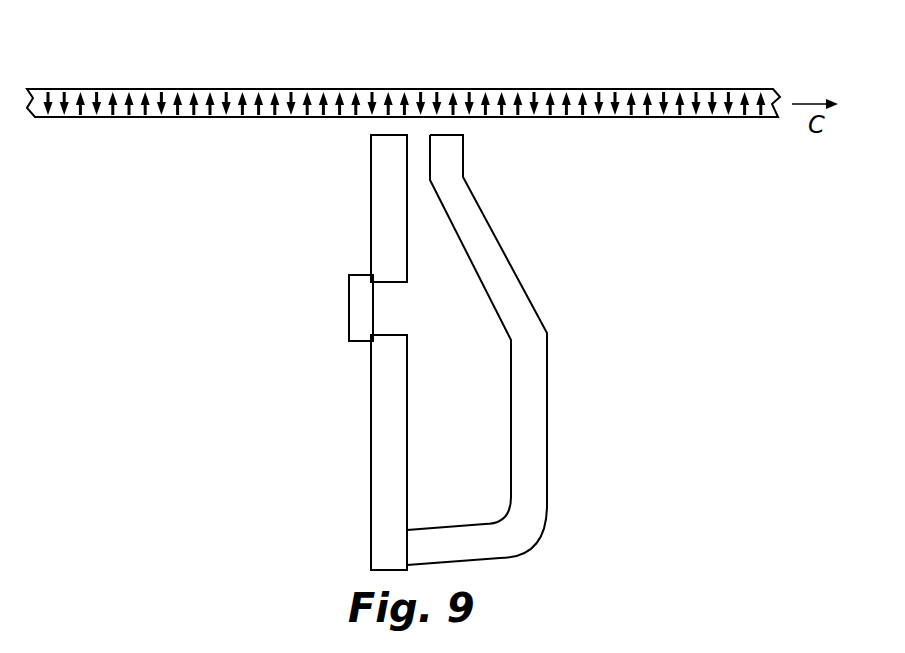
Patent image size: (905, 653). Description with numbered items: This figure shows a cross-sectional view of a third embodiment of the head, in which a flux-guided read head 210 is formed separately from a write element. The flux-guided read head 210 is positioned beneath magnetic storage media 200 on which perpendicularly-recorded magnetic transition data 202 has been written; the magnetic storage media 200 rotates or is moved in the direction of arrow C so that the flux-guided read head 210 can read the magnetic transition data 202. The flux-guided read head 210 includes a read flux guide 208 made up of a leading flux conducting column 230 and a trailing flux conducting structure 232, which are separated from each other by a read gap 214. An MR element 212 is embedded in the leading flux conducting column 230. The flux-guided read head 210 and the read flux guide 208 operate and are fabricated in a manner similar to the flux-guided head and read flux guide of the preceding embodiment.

The magnetic storage media 200 is at (727, 88).
The perpendicularly-recorded magnetic transition data 202 is at (664, 97).
The read flux guide 208 is at (493, 557).
The flux-guided read head 210 is at (540, 358).
The MR element 212 is at (350, 309).
The read gap 214 is at (421, 142).
The leading flux conducting column 230 is at (383, 455).
The trailing flux conducting structure 232 is at (495, 267).